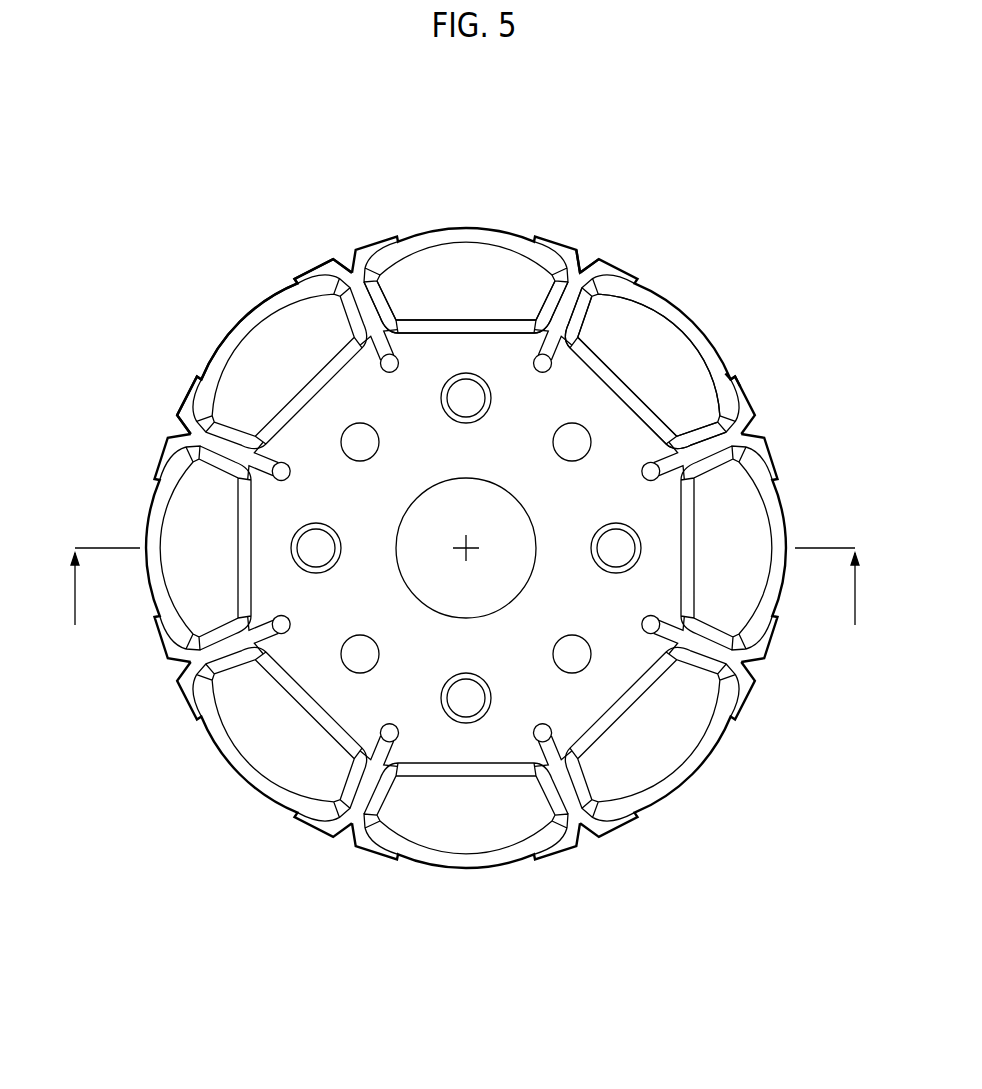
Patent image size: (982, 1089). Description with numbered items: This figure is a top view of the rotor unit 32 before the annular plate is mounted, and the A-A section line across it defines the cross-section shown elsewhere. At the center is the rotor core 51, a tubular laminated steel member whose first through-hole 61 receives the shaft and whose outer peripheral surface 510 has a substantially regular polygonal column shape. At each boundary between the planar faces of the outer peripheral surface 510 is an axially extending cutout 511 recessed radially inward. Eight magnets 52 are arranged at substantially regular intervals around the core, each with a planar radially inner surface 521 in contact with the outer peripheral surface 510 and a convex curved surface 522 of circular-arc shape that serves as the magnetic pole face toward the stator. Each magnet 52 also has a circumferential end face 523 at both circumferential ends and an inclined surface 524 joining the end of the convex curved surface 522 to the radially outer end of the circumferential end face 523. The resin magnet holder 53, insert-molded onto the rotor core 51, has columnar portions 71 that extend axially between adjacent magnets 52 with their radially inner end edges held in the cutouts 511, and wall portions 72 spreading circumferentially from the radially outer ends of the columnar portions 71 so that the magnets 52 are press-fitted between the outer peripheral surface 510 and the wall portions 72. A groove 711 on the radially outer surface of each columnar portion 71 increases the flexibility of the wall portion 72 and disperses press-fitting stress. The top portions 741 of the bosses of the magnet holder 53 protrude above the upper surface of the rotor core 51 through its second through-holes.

The rotor unit 32 is at (303, 170).
The magnet 52 is at (492, 263).
The wall portion 72 is at (548, 235).
The groove 711 is at (588, 252).
The columnar portion 71 is at (600, 322).
The radially outer surface (convex curved surface) 522 is at (713, 348).
The outer peripheral surface 510 is at (643, 407).
The inclined surface 524 is at (747, 431).
The circumferential end face 523 is at (727, 462).
The radially inner surface 521 is at (545, 385).
The cutout 511 is at (373, 363).
The rotor core 51 is at (372, 698).
The top portion 741 is at (466, 705).
The first through-hole 61 is at (508, 557).
The magnet holder 53 is at (632, 838).